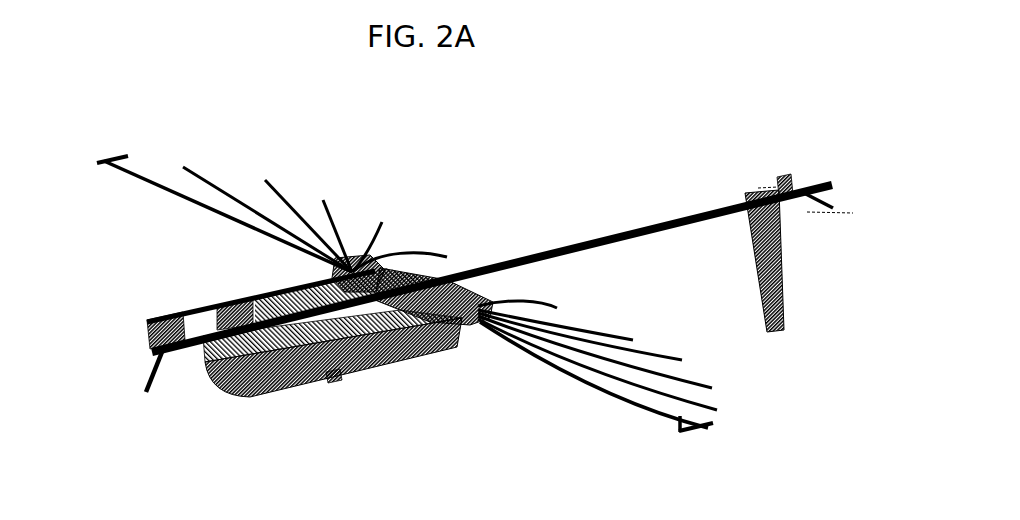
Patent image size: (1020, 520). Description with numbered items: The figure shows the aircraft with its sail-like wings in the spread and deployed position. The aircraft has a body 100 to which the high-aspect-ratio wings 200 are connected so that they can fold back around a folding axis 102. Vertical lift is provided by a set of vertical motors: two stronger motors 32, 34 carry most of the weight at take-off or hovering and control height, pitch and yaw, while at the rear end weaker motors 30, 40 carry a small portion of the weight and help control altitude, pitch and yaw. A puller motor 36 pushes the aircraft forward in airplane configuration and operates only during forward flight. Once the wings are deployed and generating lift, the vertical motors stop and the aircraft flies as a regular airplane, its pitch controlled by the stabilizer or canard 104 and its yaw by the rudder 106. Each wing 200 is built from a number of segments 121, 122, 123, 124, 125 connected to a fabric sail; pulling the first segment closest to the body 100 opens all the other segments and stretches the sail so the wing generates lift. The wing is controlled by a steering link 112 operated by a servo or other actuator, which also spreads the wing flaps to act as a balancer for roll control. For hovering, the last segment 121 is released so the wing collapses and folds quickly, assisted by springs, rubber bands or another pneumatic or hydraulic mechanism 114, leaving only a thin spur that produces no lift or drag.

The wings 200 is at (255, 308).
The rear vertical motor 30 is at (792, 174).
The stronger vertical motor 32 is at (173, 304).
The stronger vertical motor 34 is at (332, 381).
The puller motor 36 is at (148, 357).
The rear vertical motor 40 is at (836, 195).
The body 100 is at (265, 288).
The folding axis 102 is at (503, 356).
The canard 104 is at (205, 393).
The rudder 106 is at (781, 272).
The steering link 112 is at (100, 158).
The folding mechanism 114 is at (373, 262).
The last segment 121 is at (475, 270).
The wing segment 122 is at (512, 258).
The wing segment 123 is at (511, 255).
The wing segment 124 is at (497, 266).
The wing segment 125 is at (471, 276).